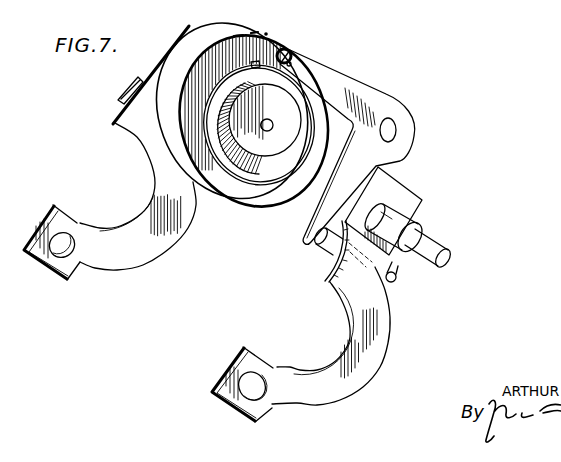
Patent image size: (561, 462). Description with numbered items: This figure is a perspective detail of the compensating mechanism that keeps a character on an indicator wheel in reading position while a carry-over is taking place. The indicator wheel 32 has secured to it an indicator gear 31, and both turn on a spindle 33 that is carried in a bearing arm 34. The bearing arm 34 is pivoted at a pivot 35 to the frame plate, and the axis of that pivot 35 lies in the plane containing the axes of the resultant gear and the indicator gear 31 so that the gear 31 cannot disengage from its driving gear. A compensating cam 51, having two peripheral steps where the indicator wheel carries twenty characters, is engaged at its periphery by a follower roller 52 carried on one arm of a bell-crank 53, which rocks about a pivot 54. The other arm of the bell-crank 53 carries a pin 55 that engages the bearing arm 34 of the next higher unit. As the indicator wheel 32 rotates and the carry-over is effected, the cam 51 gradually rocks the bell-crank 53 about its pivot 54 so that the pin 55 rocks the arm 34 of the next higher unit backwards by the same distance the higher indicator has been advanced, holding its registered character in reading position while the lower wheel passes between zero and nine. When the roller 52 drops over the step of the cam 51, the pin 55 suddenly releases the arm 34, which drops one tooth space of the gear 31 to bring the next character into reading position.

The indicator gear 31 is at (262, 150).
The indicator wheel 32 is at (186, 29).
The spindle 33 is at (272, 129).
The bearing arm 34 is at (157, 58).
The pivot 35 is at (62, 253).
The compensating cam 51 is at (225, 160).
The follower roller 52 is at (292, 53).
The bell-crank 53 is at (325, 80).
The pivot 54 is at (396, 130).
The pin 55 is at (338, 244).